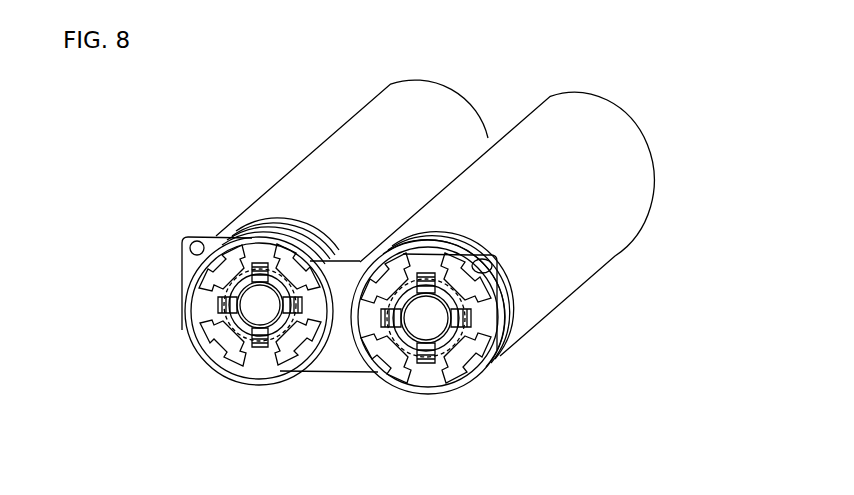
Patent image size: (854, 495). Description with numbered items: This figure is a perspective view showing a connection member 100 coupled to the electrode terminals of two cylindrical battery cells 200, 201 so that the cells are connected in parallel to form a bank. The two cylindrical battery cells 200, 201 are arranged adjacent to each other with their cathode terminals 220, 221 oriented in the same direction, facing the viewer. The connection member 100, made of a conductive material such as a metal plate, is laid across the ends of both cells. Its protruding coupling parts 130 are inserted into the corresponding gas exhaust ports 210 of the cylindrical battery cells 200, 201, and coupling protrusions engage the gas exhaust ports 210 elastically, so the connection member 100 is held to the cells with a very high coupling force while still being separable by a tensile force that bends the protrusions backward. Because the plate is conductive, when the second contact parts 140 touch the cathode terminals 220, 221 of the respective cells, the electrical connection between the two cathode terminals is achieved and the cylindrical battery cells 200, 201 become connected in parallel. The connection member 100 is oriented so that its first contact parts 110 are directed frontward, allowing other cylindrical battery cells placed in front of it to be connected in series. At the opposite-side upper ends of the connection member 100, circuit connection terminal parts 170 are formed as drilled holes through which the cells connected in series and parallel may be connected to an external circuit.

The connection member 100 is at (185, 286).
The first contact part 110 is at (253, 385).
The protruding coupling part 130 is at (265, 262).
The second contact part 140 is at (433, 317).
The circuit connection terminal part 170 is at (480, 259).
The cylindrical battery cell 200 is at (305, 167).
The cylindrical battery cell 201 is at (592, 250).
The gas exhaust port 210 is at (404, 268).
The cathode terminal 220 is at (227, 322).
The cathode terminal 221 is at (392, 350).